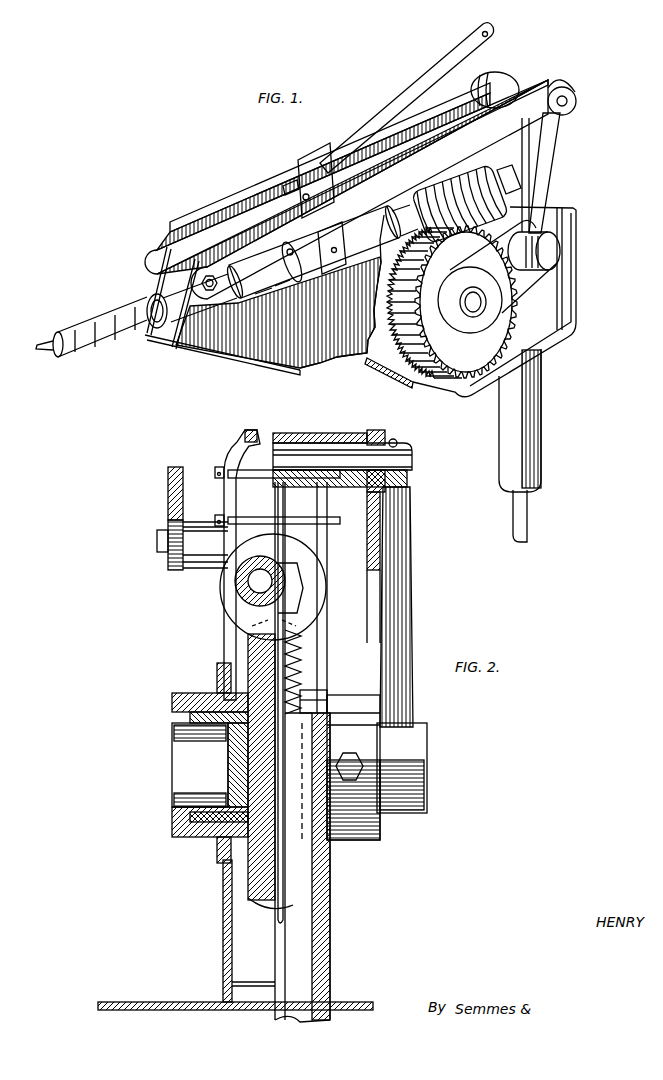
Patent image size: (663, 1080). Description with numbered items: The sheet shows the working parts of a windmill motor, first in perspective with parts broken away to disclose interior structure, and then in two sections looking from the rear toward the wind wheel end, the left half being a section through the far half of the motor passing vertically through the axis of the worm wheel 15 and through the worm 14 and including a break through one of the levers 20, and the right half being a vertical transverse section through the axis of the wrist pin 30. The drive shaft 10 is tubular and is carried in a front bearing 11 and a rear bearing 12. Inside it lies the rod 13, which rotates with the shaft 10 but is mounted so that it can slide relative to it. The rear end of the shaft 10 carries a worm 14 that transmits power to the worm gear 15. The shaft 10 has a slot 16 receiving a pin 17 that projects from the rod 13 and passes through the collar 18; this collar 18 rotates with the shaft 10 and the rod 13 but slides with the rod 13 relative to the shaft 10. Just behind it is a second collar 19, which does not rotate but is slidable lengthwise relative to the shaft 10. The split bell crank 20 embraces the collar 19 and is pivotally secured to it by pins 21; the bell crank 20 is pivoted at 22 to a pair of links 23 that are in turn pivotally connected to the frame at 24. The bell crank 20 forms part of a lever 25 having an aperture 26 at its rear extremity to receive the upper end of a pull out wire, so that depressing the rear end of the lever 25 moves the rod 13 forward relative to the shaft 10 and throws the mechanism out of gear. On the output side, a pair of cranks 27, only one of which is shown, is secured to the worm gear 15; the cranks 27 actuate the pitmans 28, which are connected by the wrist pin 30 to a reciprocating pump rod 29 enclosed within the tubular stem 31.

In FIG. 1, the drive shaft 10 is at (114, 318).
In FIG. 1, the front bearing 11 is at (150, 296).
In FIG. 1, the rear bearing 12 is at (366, 222).
In FIG. 2, the rear bearing 12 is at (205, 545).
In FIG. 1, the rod 13 is at (41, 344).
In FIG. 2, the rod 13 is at (268, 585).
In FIG. 1, the worm 14 is at (443, 183).
In FIG. 2, the worm 14 is at (227, 589).
In FIG. 1, the worm gear 15 is at (460, 358).
In FIG. 2, the worm gear 15 is at (248, 647).
In FIG. 1, the slot 16 is at (258, 302).
In FIG. 1, the pin 17 is at (280, 302).
In FIG. 1, the collar 18 is at (298, 264).
In FIG. 1, the second collar 19 is at (292, 290).
In FIG. 1, the split bell crank 20 is at (312, 162).
In FIG. 2, the split bell crank 20 is at (232, 444).
In FIG. 1, the pins 21 is at (336, 270).
In FIG. 1, the pivot 22 is at (289, 189).
In FIG. 2, the pivot 22 is at (216, 470).
In FIG. 1, the links 23 is at (266, 216).
In FIG. 2, the links 23 is at (270, 516).
In FIG. 1, the frame pivot 24 is at (204, 228).
In FIG. 2, the frame pivot 24 is at (217, 516).
In FIG. 1, the lever 25 is at (428, 70).
In FIG. 1, the aperture 26 is at (491, 35).
In FIG. 1, the crank 27 is at (504, 285).
In FIG. 2, the crank 27 is at (372, 748).
In FIG. 1, the pitman 28 is at (560, 165).
In FIG. 2, the pitman 28 is at (412, 563).
In FIG. 1, the pump rod 29 is at (530, 182).
In FIG. 2, the pump rod 29 is at (284, 871).
In FIG. 1, the wrist pin 30 is at (577, 102).
In FIG. 2, the wrist pin 30 is at (414, 459).
In FIG. 1, the tubular stem 31 is at (543, 412).
In FIG. 2, the tubular stem 31 is at (331, 923).